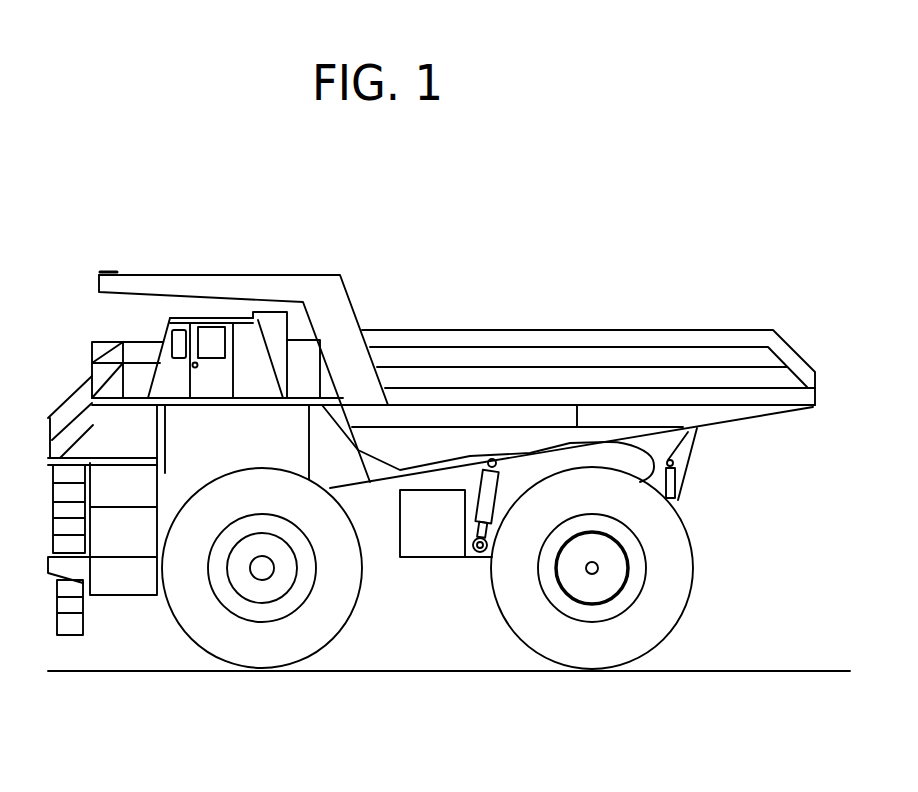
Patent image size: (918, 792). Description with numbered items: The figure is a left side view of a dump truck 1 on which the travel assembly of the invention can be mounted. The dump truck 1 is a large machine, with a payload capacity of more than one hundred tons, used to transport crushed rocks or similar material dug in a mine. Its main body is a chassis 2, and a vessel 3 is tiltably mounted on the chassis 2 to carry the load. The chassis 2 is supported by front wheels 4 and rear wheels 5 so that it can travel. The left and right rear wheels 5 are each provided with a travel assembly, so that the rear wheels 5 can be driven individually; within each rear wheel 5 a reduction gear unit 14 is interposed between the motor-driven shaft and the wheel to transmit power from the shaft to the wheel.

The dump truck 1 is at (143, 271).
The chassis 2 is at (388, 512).
The vessel 3 is at (512, 335).
The front wheels 4 is at (267, 657).
The rear wheels 5 is at (597, 653).
The reduction gear unit 14 is at (612, 573).